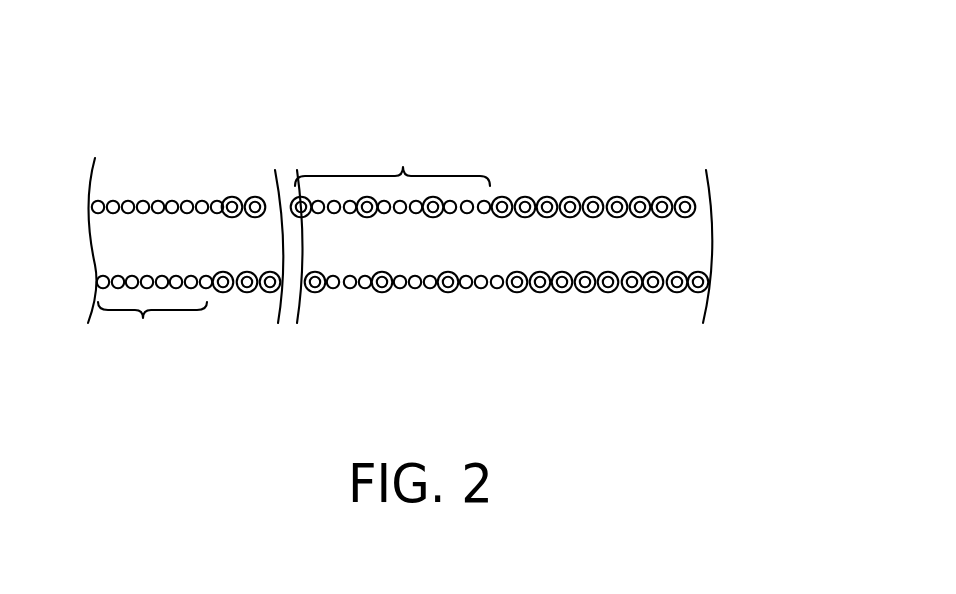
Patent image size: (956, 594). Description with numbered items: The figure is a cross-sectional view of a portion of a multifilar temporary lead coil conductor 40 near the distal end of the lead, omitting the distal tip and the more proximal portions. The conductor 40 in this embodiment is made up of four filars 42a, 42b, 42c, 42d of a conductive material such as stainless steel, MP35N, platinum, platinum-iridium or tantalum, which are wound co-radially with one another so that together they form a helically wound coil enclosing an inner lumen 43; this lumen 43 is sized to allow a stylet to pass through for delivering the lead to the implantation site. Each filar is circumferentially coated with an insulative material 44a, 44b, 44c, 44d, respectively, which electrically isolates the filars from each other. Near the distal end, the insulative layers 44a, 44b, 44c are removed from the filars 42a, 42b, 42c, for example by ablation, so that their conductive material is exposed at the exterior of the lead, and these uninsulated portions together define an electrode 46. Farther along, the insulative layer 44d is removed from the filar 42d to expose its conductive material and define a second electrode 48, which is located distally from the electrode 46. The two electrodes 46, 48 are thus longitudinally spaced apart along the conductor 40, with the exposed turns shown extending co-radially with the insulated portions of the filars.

The multifilar temporary lead coil conductor 40 is at (150, 70).
The filar 42a is at (567, 197).
The filar 42b is at (538, 197).
The filar 42c is at (526, 197).
The filar 42d is at (183, 201).
The inner lumen 43 is at (730, 252).
The insulative material 44a is at (606, 306).
The insulative material 44b is at (575, 310).
The insulative material 44c is at (537, 312).
The insulative material 44d is at (517, 314).
The electrode 46 is at (397, 217).
The electrode 48 is at (154, 313).